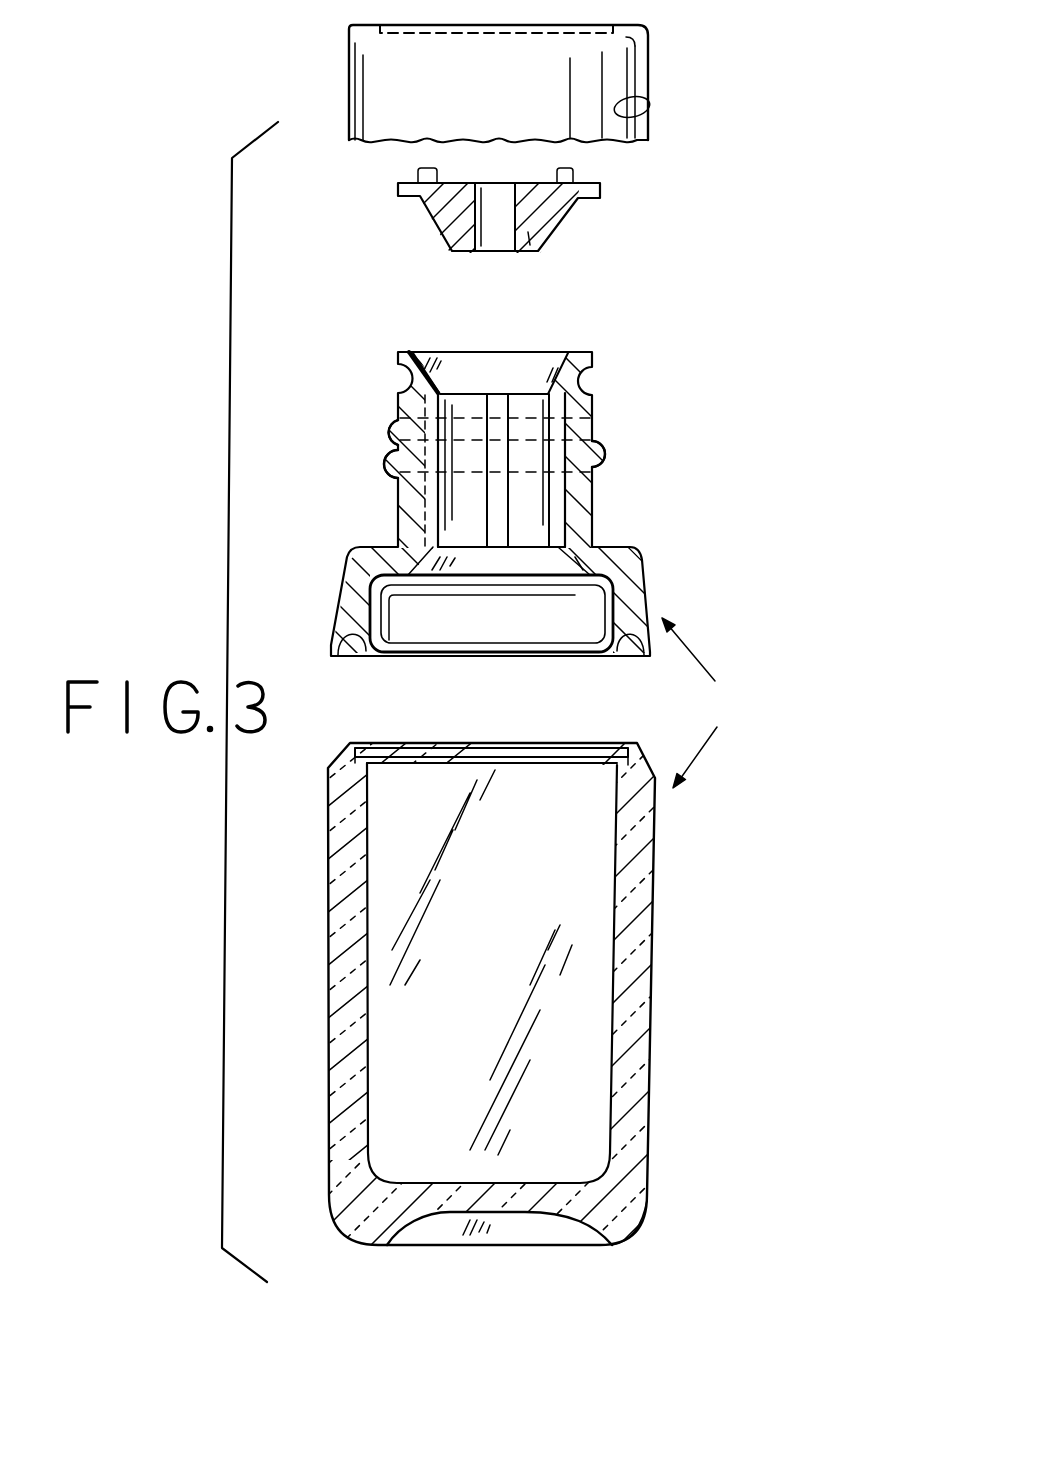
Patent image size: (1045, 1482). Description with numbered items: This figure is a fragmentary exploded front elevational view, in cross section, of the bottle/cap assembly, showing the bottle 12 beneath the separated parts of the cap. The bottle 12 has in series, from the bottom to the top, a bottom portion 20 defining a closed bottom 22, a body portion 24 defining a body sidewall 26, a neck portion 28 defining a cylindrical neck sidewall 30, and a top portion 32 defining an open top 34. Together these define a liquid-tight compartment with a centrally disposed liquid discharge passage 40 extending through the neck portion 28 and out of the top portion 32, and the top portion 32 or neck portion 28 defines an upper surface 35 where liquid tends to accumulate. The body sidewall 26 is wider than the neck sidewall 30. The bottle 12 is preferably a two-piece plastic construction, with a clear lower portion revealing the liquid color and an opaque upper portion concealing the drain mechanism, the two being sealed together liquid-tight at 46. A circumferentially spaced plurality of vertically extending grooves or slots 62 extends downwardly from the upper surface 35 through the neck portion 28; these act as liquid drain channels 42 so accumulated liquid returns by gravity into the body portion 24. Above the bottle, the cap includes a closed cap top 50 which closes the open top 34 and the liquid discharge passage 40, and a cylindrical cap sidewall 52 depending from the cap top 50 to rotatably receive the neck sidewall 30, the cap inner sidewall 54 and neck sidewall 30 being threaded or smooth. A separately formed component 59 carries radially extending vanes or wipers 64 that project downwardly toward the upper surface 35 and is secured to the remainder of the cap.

The bottle 12 is at (698, 703).
The bottom portion 20 is at (475, 1248).
The closed bottom 22 is at (608, 1238).
The body portion 24 is at (328, 938).
The body sidewall 26 is at (645, 938).
The neck portion 28 is at (392, 521).
The cylindrical neck sidewall 30 is at (578, 529).
The top portion 32 is at (595, 362).
The open top 34 is at (502, 352).
The upper surface 35 is at (440, 373).
The liquid discharge passage 40 is at (500, 490).
The liquid drain channels 42 is at (395, 501).
The seal 46 is at (522, 749).
The closed cap top 50 is at (432, 24).
The cylindrical cap sidewall 52 is at (650, 76).
The cap inner sidewall 54 is at (648, 113).
The component containing vanes or wipers 59 is at (563, 227).
The vertically extending grooves or slots 62 is at (558, 412).
The vanes or wipers 64 is at (529, 243).